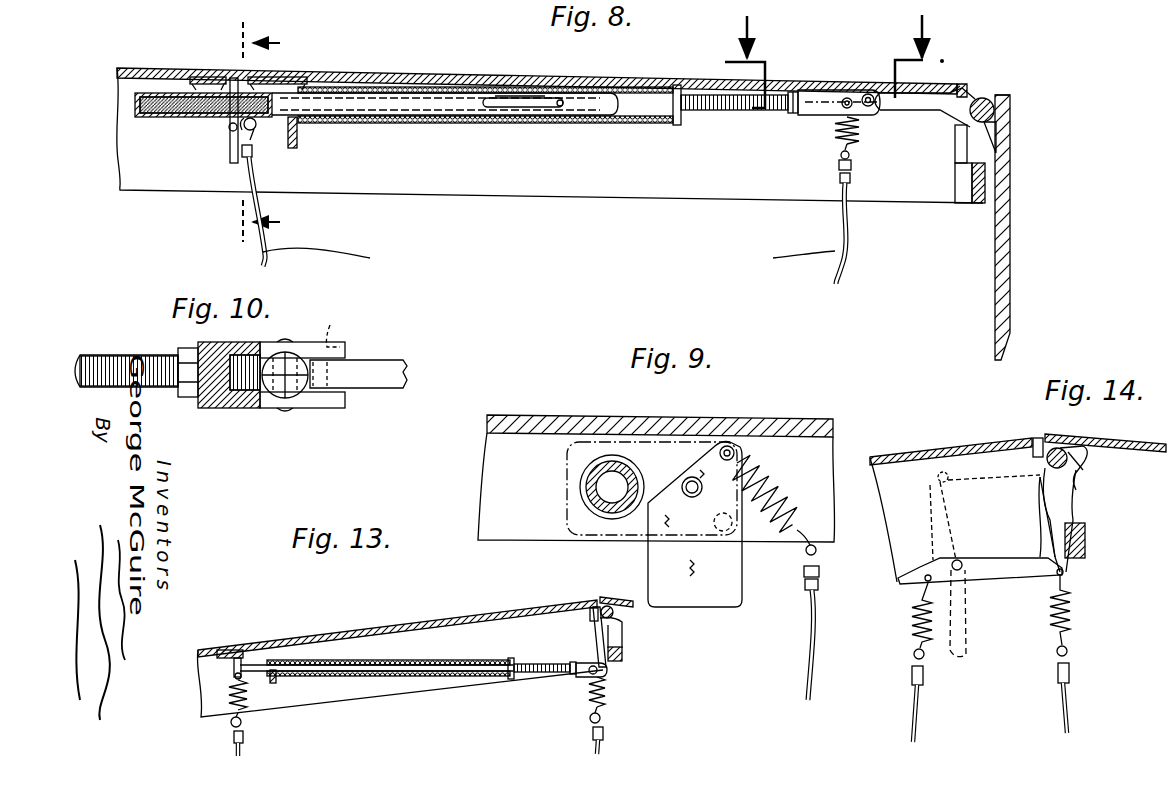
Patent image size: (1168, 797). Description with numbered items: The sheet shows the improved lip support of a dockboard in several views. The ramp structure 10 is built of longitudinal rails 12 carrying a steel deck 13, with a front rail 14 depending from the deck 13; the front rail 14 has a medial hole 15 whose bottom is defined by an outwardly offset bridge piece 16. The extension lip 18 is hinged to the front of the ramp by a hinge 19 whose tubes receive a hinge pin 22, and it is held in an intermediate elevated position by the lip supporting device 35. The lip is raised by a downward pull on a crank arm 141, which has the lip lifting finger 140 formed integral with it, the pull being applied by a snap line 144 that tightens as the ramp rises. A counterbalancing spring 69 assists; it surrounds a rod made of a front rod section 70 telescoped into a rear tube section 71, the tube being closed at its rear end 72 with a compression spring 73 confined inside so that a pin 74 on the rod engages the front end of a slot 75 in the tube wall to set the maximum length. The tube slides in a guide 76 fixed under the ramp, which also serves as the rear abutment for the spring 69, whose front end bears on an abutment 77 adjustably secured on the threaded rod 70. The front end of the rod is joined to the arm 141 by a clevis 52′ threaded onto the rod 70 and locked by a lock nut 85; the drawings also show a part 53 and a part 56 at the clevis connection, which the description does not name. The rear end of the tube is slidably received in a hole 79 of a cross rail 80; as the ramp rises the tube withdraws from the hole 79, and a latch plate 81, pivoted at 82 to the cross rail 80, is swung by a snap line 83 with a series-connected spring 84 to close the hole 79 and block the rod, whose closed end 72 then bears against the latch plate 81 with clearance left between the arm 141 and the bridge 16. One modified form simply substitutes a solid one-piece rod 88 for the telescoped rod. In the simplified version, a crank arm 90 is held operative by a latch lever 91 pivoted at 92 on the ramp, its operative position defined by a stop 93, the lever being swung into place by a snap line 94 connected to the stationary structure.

In FIG. 8, the ramp structure 10 is at (427, 63).
In FIG. 9, the ramp structure 10 is at (550, 402).
In FIG. 13, the ramp structure 10 is at (347, 618).
In FIG. 14, the ramp structure 10 is at (938, 432).
In FIG. 8, the longitudinal rails 12 is at (546, 189).
In FIG. 13, the longitudinal rails 12 is at (423, 642).
In FIG. 14, the longitudinal rails 12 is at (903, 478).
In FIG. 8, the deck 13 is at (624, 82).
In FIG. 9, the deck 13 is at (624, 422).
In FIG. 13, the deck 13 is at (477, 617).
In FIG. 14, the deck 13 is at (960, 457).
In FIG. 8, the front rail 14 is at (975, 95).
In FIG. 13, the front rail 14 is at (583, 603).
In FIG. 14, the front rail 14 is at (1033, 437).
In FIG. 13, the hole 15 is at (592, 620).
In FIG. 14, the hole 15 is at (1037, 470).
In FIG. 8, the bridge piece 16 is at (973, 185).
In FIG. 13, the bridge piece 16 is at (625, 656).
In FIG. 14, the bridge piece 16 is at (1086, 538).
In FIG. 8, the extension lip 18 is at (1010, 197).
In FIG. 8, the hinge 19 is at (988, 103).
In FIG. 13, the hinge 19 is at (607, 612).
In FIG. 14, the hinge 19 is at (1063, 455).
In FIG. 8, the hinge pin 22 is at (1012, 110).
In FIG. 14, the hinge pin 22 is at (1084, 470).
In FIG. 8, the lip supporting device 35 is at (935, 222).
In FIG. 13, the lip supporting device 35 is at (570, 692).
In FIG. 14, the lip supporting device 35 is at (1003, 616).
In FIG. 8, the clevis 52′ is at (813, 96).
In FIG. 10, the clevis 52′ is at (303, 346).
In FIG. 8, the tension spring 53 is at (868, 112).
In FIG. 10, the tension spring 53 is at (332, 333).
In FIG. 13, the tension spring 53 is at (610, 673).
In FIG. 8, the pivot pin 56 is at (847, 98).
In FIG. 10, the pivot pin 56 is at (287, 412).
In FIG. 8, the counterbalancing spring 69 is at (364, 122).
In FIG. 13, the counterbalancing spring 69 is at (363, 674).
In FIG. 8, the front section 70 is at (703, 113).
In FIG. 10, the front section 70 is at (132, 360).
In FIG. 8, the rear section 71 is at (445, 101).
In FIG. 8, the closed end 72 is at (175, 118).
In FIG. 8, the compression spring 73 is at (163, 115).
In FIG. 8, the pin 74 is at (560, 113).
In FIG. 8, the slot 75 is at (522, 100).
In FIG. 8, the guide 76 is at (304, 78).
In FIG. 8, the abutment 77 is at (678, 123).
In FIG. 13, the abutment 77 is at (512, 659).
In FIG. 8, the hole 79 is at (223, 78).
In FIG. 9, the hole 79 is at (580, 475).
In FIG. 13, the hole 79 is at (232, 672).
In FIG. 8, the cross rail 80 is at (229, 128).
In FIG. 9, the cross rail 80 is at (527, 534).
In FIG. 13, the cross rail 80 is at (227, 652).
In FIG. 8, the latch plate 81 is at (230, 158).
In FIG. 9, the latch plate 81 is at (650, 572).
In FIG. 13, the latch plate 81 is at (243, 653).
In FIG. 9, the pivot 82 is at (686, 479).
In FIG. 8, the snap line 83 is at (257, 182).
In FIG. 9, the snap line 83 is at (803, 655).
In FIG. 13, the snap line 83 is at (244, 751).
In FIG. 8, the spring 84 is at (256, 132).
In FIG. 9, the spring 84 is at (780, 482).
In FIG. 13, the spring 84 is at (232, 703).
In FIG. 8, the lock nut 85 is at (800, 117).
In FIG. 10, the lock nut 85 is at (188, 388).
In FIG. 13, the solid one-piece rod 88 is at (423, 668).
In FIG. 14, the crank arm 90 is at (1077, 503).
In FIG. 14, the latch lever 91 is at (987, 573).
In FIG. 14, the pivot 92 is at (957, 562).
In FIG. 14, the stop 93 is at (1040, 552).
In FIG. 14, the snap line 94 is at (913, 705).
In FIG. 8, the lip lifting finger 140 is at (998, 143).
In FIG. 13, the lip lifting finger 140 is at (618, 614).
In FIG. 14, the lip lifting finger 140 is at (1085, 449).
In FIG. 8, the crank arm 141 is at (915, 107).
In FIG. 10, the crank arm 141 is at (372, 370).
In FIG. 13, the crank arm 141 is at (593, 647).
In FIG. 8, the snap line 144 is at (849, 238).
In FIG. 13, the snap line 144 is at (602, 750).
In FIG. 14, the snap line 144 is at (1063, 708).